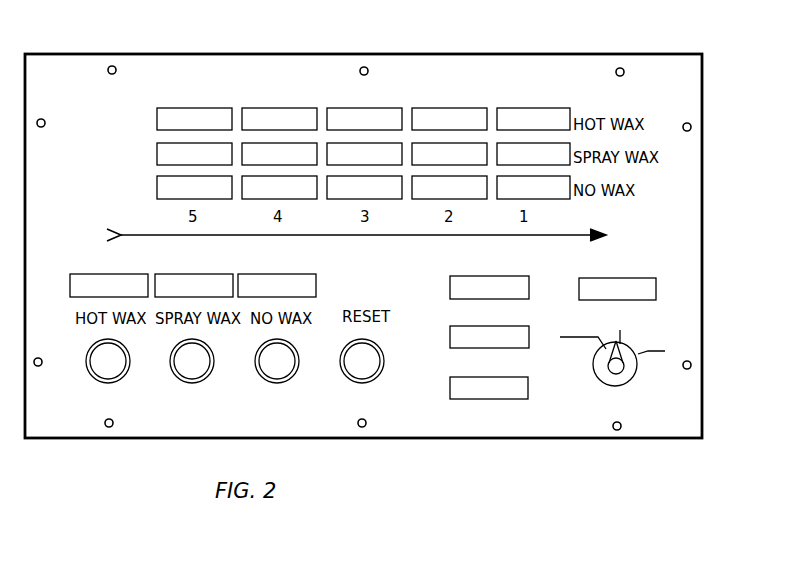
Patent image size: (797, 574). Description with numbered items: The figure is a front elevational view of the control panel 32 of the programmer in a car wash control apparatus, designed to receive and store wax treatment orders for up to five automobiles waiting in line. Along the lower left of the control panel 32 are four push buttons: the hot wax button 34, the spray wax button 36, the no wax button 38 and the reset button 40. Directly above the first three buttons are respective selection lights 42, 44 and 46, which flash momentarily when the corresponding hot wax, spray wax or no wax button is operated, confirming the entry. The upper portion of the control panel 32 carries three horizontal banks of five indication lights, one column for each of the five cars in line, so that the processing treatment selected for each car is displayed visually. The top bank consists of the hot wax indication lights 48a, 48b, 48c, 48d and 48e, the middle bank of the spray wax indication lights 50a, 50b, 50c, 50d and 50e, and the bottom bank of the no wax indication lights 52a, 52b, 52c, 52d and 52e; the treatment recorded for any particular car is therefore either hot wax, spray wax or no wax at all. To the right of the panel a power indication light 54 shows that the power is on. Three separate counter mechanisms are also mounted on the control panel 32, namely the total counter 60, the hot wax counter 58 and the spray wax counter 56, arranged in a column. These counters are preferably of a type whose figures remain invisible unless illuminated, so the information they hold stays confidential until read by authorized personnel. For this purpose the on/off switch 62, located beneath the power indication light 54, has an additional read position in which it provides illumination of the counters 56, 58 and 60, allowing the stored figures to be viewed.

The control panel 32 is at (465, 58).
The hot wax button 34 is at (115, 373).
The spray wax button 36 is at (198, 373).
The no wax button 38 is at (282, 373).
The reset button 40 is at (368, 373).
The selection light 42 is at (102, 285).
The selection light 44 is at (195, 285).
The selection light 46 is at (280, 285).
The hot wax indication light 48a is at (513, 115).
The hot wax indication light 48b is at (444, 115).
The hot wax indication light 48c is at (353, 115).
The hot wax indication light 48d is at (267, 115).
The hot wax indication light 48e is at (195, 115).
The spray wax indication light 50a is at (521, 153).
The spray wax indication light 50b is at (437, 150).
The spray wax indication light 50c is at (352, 150).
The spray wax indication light 50d is at (265, 150).
The spray wax indication light 50e is at (163, 155).
The no wax indication light 52a is at (530, 193).
The no wax indication light 52b is at (452, 193).
The no wax indication light 52c is at (356, 193).
The no wax indication light 52d is at (272, 193).
The no wax indication light 52e is at (163, 185).
The power indication light 54 is at (652, 292).
The spray wax counter 56 is at (442, 380).
The hot wax counter 58 is at (453, 337).
The total counter 60 is at (453, 287).
The on/off switch 62 is at (624, 371).